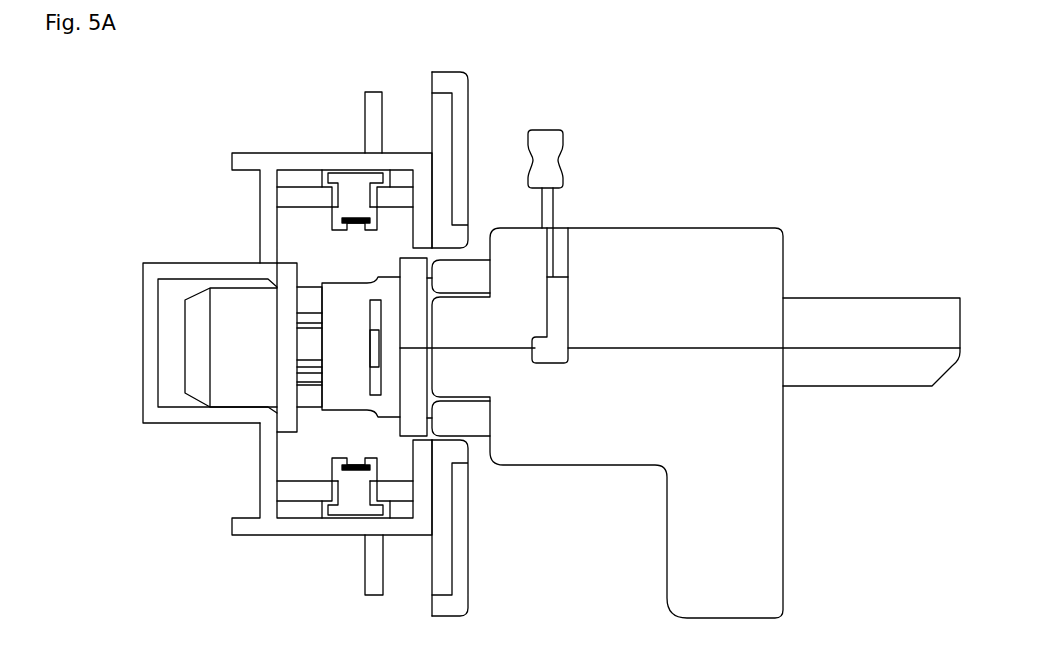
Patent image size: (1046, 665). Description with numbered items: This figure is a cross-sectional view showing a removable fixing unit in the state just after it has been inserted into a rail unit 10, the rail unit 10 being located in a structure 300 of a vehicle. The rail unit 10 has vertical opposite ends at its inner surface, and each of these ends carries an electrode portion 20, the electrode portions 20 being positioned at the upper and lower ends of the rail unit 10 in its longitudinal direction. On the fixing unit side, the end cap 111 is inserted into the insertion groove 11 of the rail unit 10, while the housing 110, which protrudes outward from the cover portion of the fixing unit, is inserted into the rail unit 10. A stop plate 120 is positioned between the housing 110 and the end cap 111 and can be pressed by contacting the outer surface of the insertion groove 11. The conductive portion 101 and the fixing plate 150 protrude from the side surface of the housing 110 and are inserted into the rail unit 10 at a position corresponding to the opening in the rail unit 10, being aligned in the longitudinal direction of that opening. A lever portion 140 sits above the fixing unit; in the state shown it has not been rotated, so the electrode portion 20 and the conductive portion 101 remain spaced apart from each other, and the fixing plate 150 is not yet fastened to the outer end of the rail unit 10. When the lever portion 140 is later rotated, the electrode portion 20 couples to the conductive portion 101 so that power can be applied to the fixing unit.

The rail unit 10 is at (243, 160).
The insertion groove 11 is at (172, 312).
The electrode portion 20 is at (338, 188).
The conductive portion 101 is at (375, 332).
The housing 110 is at (350, 393).
The end cap 111 is at (222, 357).
The stop plate 120 is at (288, 423).
The lever portion 140 is at (548, 165).
The fixing plate 150 is at (415, 380).
The structure 300 is at (458, 107).